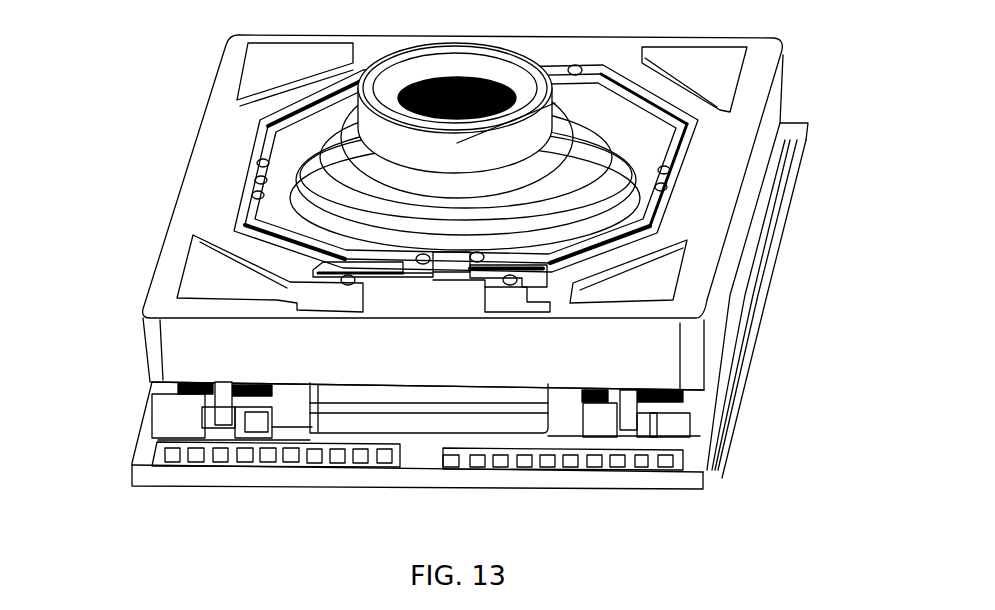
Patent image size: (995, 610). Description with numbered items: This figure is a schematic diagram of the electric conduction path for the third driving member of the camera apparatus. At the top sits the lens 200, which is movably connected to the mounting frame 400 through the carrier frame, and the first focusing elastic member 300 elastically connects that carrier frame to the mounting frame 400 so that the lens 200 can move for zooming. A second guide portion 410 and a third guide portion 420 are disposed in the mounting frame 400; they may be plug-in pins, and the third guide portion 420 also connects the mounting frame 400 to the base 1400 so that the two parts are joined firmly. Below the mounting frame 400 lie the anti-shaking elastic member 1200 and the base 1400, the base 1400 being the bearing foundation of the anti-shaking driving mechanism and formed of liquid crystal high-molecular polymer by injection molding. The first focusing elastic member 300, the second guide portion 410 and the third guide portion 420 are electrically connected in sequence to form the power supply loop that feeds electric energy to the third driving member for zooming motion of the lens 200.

The lens 200 is at (560, 91).
The first focusing elastic member 300 is at (670, 160).
The mounting frame 400 is at (710, 242).
The second guide portion 410 is at (297, 310).
The third guide portion 420 is at (225, 407).
The anti-shaking elastic member 1200 is at (288, 432).
The base 1400 is at (147, 477).